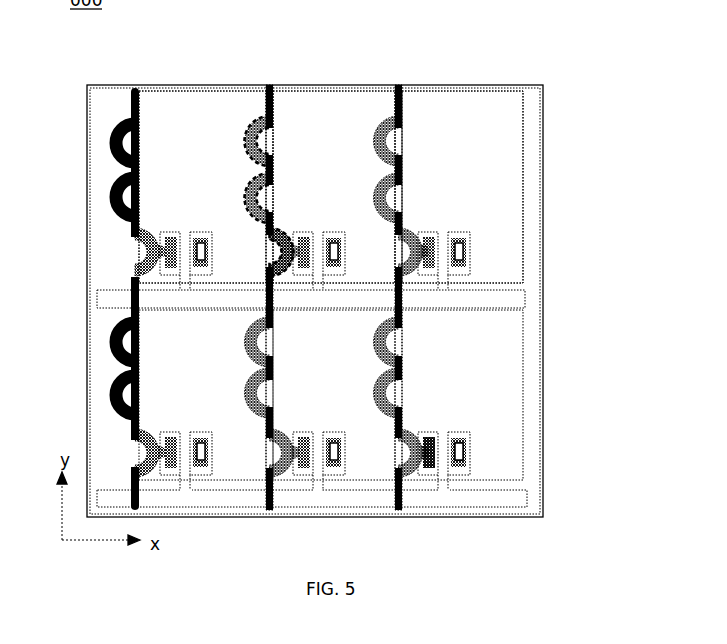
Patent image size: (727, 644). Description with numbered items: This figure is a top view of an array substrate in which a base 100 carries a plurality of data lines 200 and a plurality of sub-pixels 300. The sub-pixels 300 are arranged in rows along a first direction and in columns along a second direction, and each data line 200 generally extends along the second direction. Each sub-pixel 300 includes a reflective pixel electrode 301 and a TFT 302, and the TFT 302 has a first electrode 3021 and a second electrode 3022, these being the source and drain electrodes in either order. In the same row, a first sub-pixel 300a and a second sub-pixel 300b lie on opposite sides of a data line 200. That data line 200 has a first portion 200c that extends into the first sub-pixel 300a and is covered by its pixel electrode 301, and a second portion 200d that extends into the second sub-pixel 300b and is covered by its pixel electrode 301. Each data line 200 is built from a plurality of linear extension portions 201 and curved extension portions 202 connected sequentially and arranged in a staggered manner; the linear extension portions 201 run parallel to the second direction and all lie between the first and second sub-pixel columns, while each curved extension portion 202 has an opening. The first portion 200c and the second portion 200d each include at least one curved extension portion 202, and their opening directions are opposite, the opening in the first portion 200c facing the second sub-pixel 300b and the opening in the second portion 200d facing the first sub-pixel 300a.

The base 100 is at (533, 101).
The data line 200 is at (269, 86).
The first portion 200c is at (345, 216).
The second portion 200d is at (247, 152).
The linear extension portion 201 is at (131, 107).
The curved extension portion 202 is at (113, 155).
The sub-pixel 300 is at (596, 203).
The first sub-pixel 300a is at (309, 157).
The second sub-pixel 300b is at (170, 158).
The reflective pixel electrode 301 is at (483, 207).
The TFT 302 is at (466, 256).
The first electrode 3021 is at (440, 440).
The second electrode 3022 is at (462, 458).